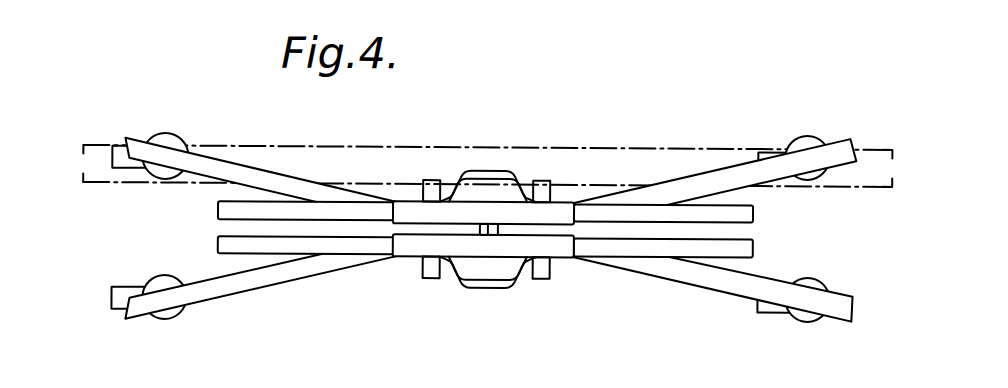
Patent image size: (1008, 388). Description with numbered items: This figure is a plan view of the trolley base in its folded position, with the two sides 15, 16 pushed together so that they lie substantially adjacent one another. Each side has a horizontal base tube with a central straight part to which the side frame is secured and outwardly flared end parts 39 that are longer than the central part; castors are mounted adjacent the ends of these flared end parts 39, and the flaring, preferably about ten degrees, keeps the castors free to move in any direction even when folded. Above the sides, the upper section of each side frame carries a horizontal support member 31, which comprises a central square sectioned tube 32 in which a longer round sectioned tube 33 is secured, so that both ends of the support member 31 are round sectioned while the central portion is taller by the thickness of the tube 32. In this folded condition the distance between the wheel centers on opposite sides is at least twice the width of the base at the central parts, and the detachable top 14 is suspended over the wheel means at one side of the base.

The detachable top 14 is at (328, 149).
The side 15 is at (420, 246).
The side 16 is at (403, 207).
The horizontal support member 31 is at (558, 209).
The central rectangular sectioned tube 32 is at (555, 248).
The round sectioned tube 33 is at (333, 247).
The outwardly flared end parts 39 is at (723, 171).